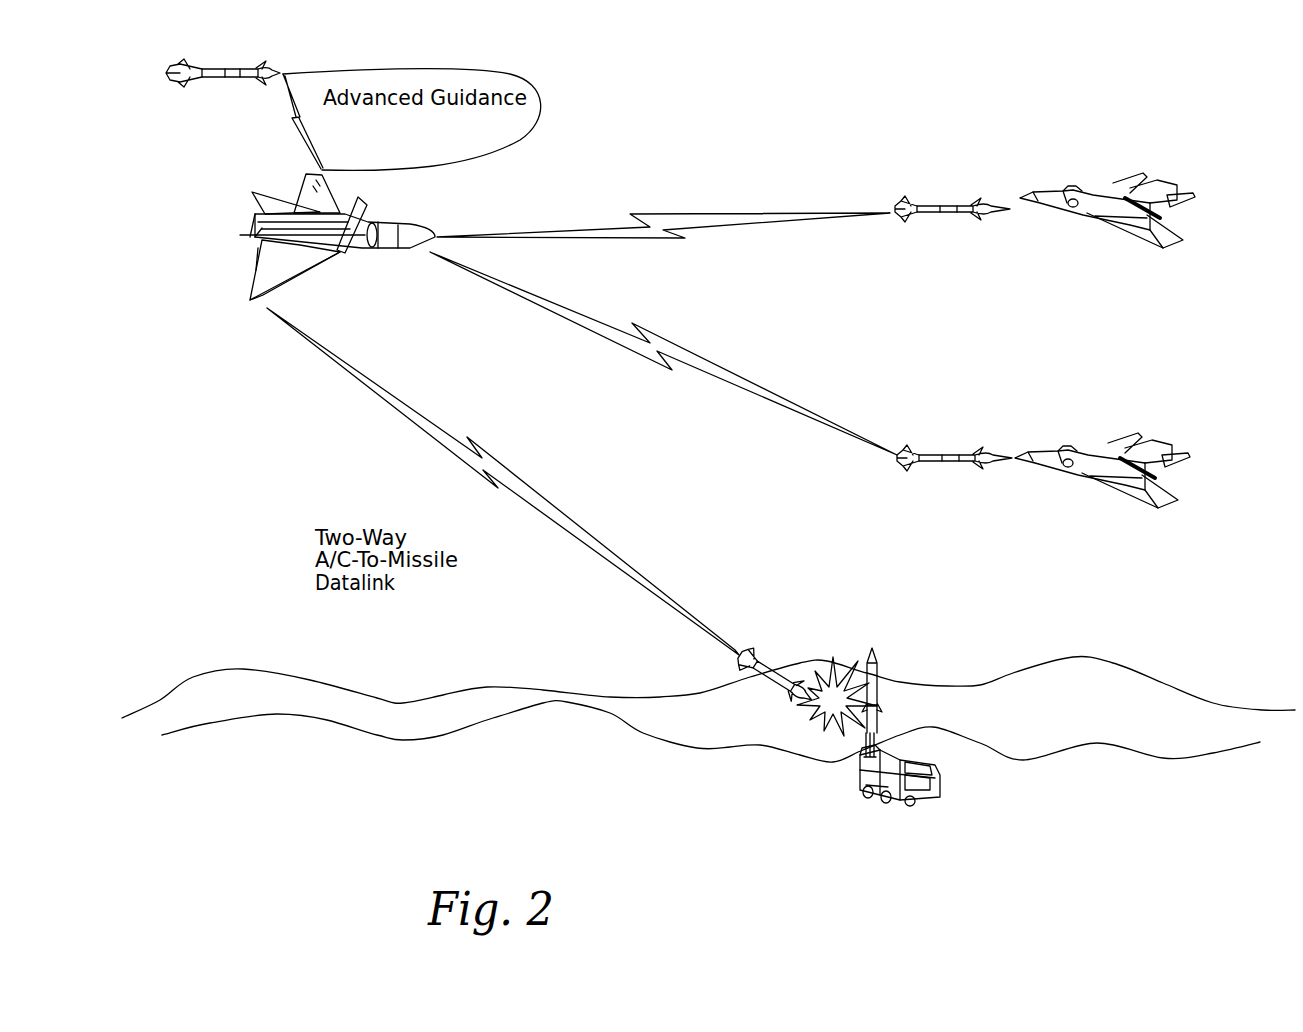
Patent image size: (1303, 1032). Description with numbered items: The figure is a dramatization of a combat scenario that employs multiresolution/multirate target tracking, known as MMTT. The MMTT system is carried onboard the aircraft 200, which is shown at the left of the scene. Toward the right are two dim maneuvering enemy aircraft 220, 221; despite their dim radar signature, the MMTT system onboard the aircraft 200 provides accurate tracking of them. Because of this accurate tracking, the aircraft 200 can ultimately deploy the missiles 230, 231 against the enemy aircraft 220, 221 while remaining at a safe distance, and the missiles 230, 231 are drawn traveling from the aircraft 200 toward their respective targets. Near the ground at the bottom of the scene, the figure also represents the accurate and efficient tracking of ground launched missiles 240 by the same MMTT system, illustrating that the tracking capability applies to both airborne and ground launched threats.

The aircraft 200 is at (402, 222).
The enemy aircraft 220 is at (1172, 212).
The enemy aircraft 221 is at (1168, 472).
The missile 230 is at (945, 215).
The missile 231 is at (950, 440).
The ground launched missile 240 is at (880, 658).